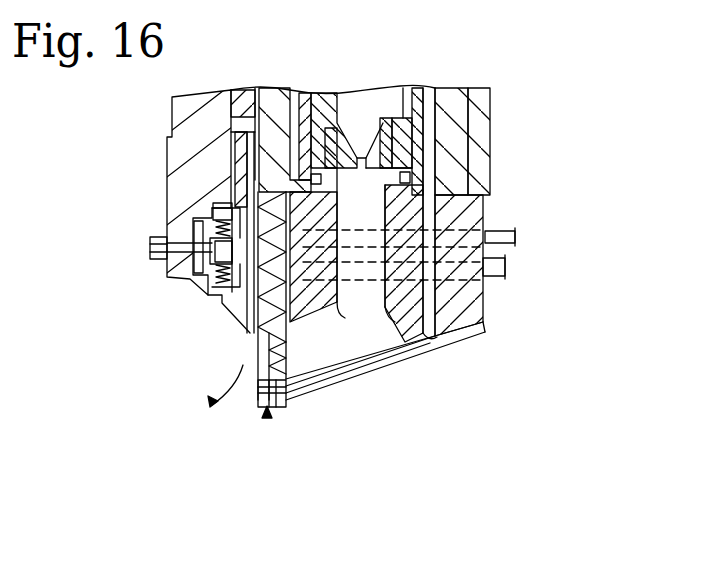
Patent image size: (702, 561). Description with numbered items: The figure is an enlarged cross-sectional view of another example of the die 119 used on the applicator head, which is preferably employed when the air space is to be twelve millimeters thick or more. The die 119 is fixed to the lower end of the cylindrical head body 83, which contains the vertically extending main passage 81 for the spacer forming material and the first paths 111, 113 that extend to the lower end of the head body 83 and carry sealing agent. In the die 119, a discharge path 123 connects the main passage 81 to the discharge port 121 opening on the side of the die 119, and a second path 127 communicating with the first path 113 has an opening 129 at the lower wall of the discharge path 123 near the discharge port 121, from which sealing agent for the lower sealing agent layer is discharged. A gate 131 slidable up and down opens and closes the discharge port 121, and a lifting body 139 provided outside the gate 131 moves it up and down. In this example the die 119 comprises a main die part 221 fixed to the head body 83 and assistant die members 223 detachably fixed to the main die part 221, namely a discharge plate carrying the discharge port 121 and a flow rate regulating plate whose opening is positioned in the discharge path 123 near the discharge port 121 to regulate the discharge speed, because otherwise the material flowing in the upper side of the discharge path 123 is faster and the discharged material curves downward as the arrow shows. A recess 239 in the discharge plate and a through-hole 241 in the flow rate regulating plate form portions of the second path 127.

The lifting body 139 is at (167, 147).
The first path 111 is at (290, 97).
The main passage 81 is at (393, 97).
The first path 113 is at (440, 93).
The head body 83 is at (492, 128).
The die 119 is at (492, 301).
The gate 131 is at (247, 311).
The discharge port 121 is at (257, 347).
The opening 129 is at (257, 380).
The recess 239 is at (263, 393).
The assistant die members 223 is at (267, 414).
The through-hole 241 is at (284, 396).
The discharge path 123 is at (345, 325).
The second path 127 is at (400, 362).
The main die part 221 is at (436, 363).